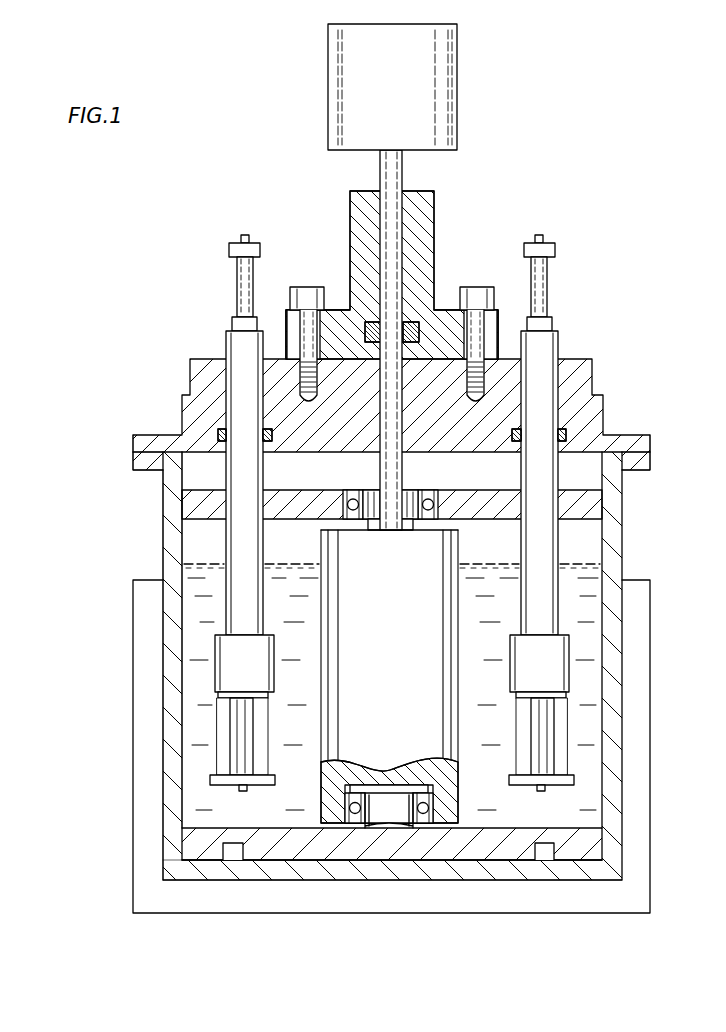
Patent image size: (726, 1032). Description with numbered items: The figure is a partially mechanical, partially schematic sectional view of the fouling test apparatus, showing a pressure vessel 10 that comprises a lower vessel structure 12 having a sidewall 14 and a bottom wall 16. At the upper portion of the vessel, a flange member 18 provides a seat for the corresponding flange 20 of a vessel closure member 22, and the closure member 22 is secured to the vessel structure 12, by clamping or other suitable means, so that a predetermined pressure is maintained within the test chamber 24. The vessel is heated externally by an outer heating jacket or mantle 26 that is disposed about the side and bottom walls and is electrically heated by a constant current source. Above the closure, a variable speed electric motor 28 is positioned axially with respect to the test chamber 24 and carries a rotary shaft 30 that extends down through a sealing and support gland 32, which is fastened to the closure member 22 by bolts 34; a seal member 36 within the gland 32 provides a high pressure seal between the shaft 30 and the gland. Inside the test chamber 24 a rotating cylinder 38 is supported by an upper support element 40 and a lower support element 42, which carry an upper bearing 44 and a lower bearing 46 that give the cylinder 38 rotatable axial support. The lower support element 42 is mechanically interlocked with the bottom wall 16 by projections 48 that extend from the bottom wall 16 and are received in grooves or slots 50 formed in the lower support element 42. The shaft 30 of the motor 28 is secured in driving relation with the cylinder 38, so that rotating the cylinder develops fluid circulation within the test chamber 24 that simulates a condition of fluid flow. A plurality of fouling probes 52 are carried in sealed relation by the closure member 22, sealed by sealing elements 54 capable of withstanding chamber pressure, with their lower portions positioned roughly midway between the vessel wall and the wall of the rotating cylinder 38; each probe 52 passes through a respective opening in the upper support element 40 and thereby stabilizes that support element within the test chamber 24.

The pressure vessel 10 is at (622, 346).
The lower vessel structure 12 is at (622, 505).
The sidewall 14 is at (170, 507).
The bottom wall 16 is at (372, 863).
The flange member 18 is at (133, 458).
The flange 20 is at (633, 438).
The vessel closure member 22 is at (182, 403).
The test chamber 24 is at (200, 545).
The outer heating jacket or mantle 26 is at (133, 652).
The variable speed electric motor 28 is at (458, 83).
The rotary shaft 30 is at (402, 178).
The sealing and support gland 32 is at (435, 216).
The bolts 34 is at (307, 287).
The seal member 36 is at (408, 324).
The rotating cylinder 38 is at (352, 700).
The upper support element 40 is at (321, 500).
The lower support element 42 is at (278, 836).
The upper bearing 44 is at (428, 490).
The lower bearing 46 is at (360, 792).
The projections 48 is at (545, 847).
The grooves or slots 50 is at (233, 862).
The fouling probes 52 is at (558, 337).
The sealing elements 54 is at (568, 434).